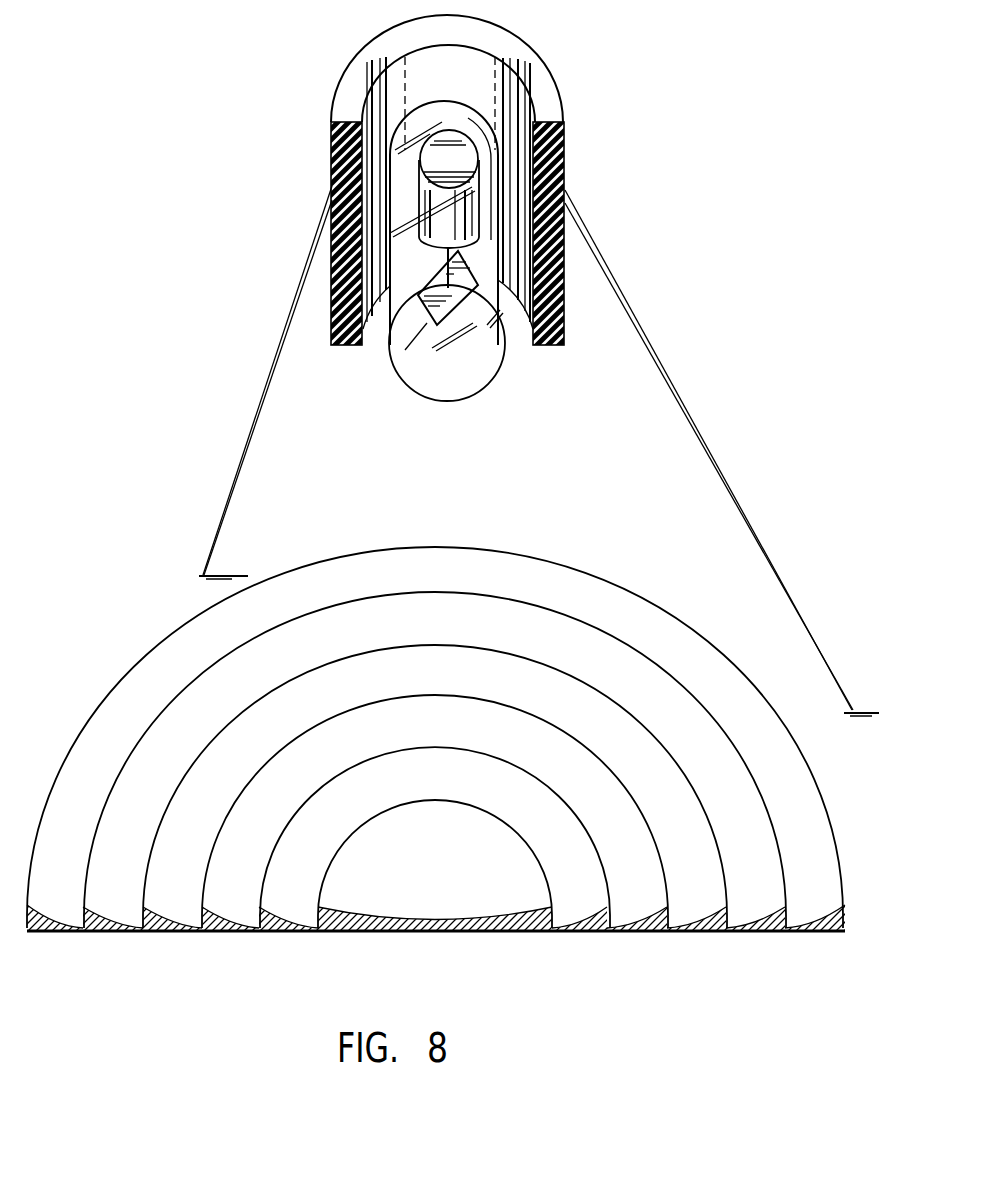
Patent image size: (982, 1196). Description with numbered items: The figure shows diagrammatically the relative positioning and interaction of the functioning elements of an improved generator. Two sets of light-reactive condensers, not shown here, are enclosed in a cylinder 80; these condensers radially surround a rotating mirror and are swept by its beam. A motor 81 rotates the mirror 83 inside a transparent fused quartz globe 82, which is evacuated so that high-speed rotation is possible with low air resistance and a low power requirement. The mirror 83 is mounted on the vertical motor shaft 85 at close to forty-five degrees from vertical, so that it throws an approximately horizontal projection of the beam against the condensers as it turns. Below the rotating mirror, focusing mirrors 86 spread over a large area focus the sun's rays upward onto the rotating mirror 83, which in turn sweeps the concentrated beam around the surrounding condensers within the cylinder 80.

The cylinder 80 is at (565, 137).
The motor 81 is at (453, 155).
The transparent fused quartz globe 82 is at (495, 385).
The mirror 83 is at (392, 367).
The vertical motor shaft 85 is at (445, 260).
The focusing mirrors 86 is at (168, 670).